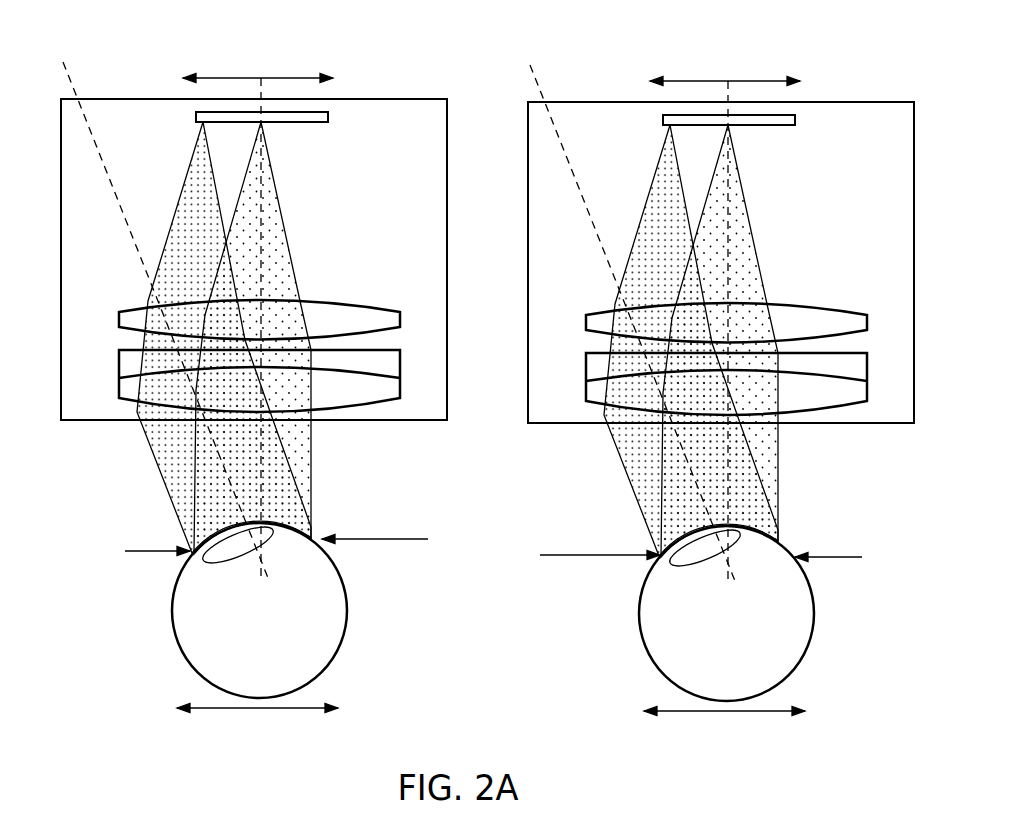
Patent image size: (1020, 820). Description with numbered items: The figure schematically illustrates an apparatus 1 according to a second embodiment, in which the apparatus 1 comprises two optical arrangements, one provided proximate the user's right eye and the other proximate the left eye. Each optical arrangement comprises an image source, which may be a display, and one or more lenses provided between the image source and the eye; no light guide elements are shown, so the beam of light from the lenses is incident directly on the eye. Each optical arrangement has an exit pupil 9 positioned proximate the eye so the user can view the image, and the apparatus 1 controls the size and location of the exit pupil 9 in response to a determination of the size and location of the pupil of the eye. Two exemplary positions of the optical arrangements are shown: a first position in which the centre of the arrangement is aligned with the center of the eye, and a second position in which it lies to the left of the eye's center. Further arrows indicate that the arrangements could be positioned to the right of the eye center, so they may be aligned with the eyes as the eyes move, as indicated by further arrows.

The apparatus 1 is at (257, 379).
The exit pupil 9 is at (540, 555).